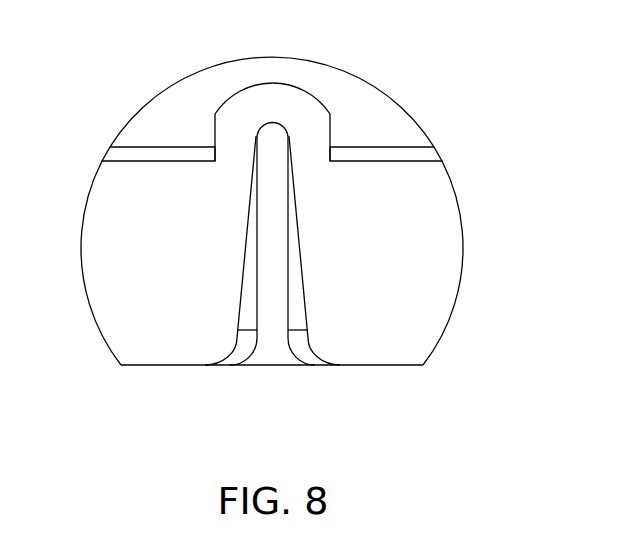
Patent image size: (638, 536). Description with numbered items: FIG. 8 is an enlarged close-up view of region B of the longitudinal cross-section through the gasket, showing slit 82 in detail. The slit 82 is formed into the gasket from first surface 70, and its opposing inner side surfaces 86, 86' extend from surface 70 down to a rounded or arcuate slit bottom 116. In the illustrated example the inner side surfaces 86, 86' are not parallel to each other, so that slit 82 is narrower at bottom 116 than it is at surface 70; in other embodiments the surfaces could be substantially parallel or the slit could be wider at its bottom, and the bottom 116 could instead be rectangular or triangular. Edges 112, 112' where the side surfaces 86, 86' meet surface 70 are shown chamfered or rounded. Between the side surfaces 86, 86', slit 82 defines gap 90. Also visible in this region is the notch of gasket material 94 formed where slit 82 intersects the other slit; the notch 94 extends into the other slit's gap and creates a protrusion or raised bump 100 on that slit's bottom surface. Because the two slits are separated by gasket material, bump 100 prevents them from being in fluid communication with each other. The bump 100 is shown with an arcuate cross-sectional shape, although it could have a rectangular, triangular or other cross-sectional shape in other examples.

The region B is at (464, 252).
The first surface 70 is at (170, 365).
The notch of gasket material 94 is at (235, 117).
The bump 100 is at (332, 128).
The slit 82 is at (302, 215).
The slit bottom 116 is at (272, 123).
The inner side surface 86 is at (210, 237).
The inner side surface 86' is at (325, 237).
The edge 112 is at (207, 335).
The edge 112' is at (340, 344).
The gap 90 is at (278, 332).